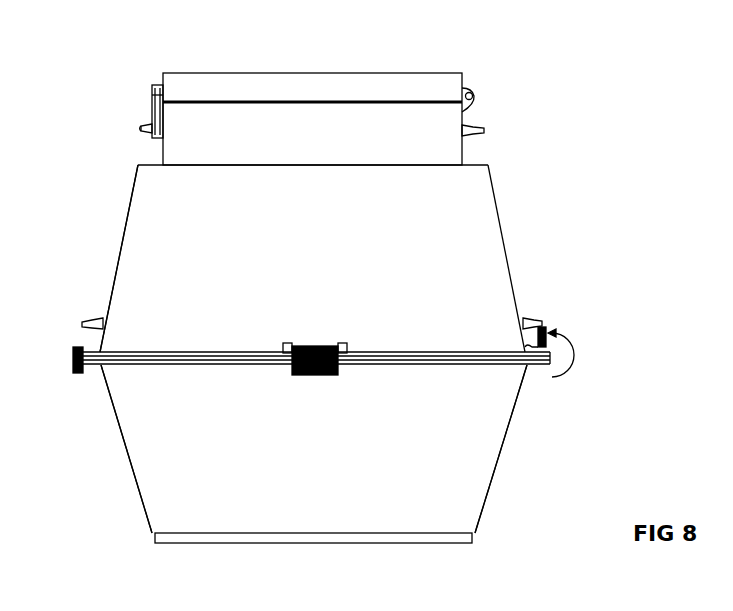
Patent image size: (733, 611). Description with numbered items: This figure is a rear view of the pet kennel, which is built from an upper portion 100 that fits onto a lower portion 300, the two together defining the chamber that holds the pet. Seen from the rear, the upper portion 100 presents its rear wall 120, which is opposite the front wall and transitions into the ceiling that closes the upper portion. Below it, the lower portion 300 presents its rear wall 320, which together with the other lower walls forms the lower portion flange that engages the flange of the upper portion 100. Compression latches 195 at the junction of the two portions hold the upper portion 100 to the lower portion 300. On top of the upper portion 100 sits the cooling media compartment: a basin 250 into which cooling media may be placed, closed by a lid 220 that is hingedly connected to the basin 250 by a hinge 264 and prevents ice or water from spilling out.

The upper portion 100 is at (492, 225).
The rear wall 120 is at (143, 257).
The compression latches 195 is at (547, 325).
The lid 220 is at (311, 84).
The basin 250 is at (182, 148).
The hinge 264 is at (471, 93).
The lower portion 300 is at (140, 438).
The rear wall 320 is at (482, 459).